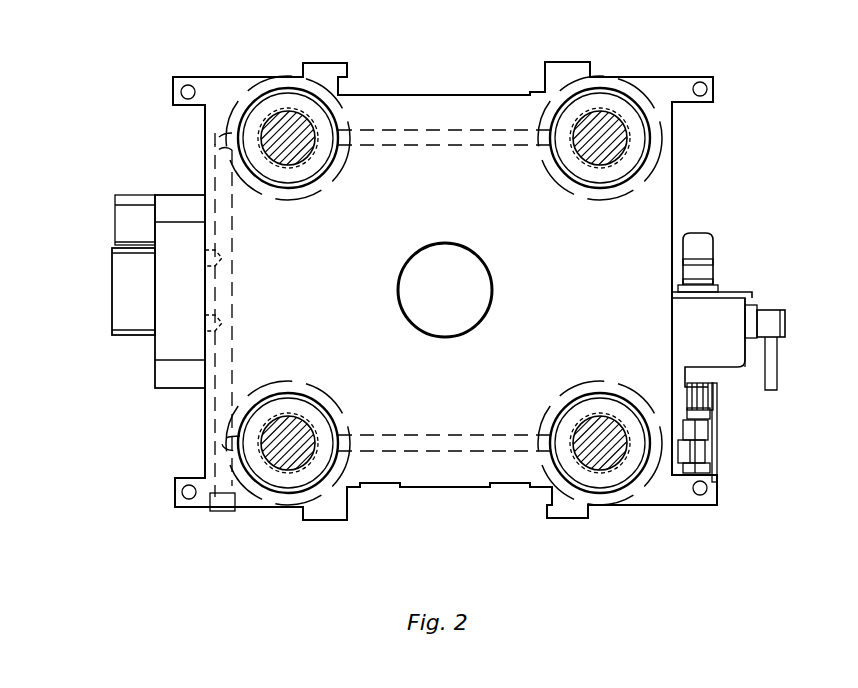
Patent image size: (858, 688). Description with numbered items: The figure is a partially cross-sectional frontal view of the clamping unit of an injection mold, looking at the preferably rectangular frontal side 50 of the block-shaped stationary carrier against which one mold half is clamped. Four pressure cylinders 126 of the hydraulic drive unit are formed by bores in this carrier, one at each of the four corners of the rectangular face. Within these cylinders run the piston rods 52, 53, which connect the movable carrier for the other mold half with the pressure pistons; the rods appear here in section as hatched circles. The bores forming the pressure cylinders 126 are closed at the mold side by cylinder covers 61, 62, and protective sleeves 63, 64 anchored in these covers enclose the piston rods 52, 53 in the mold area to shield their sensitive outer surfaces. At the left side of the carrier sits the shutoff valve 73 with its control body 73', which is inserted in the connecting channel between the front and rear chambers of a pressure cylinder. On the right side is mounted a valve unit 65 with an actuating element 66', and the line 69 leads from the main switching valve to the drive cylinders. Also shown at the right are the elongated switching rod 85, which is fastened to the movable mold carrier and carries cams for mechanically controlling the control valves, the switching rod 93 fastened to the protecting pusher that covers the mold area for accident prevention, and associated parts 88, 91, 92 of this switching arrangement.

The frontal side 50 is at (633, 222).
The piston rod 52 is at (270, 115).
The piston rod 53 is at (608, 130).
The cylinder cover 61 is at (314, 472).
The cylinder cover 62 is at (572, 465).
The protective sleeve 63 is at (290, 113).
The protective sleeve 64 is at (597, 115).
The switch 65 is at (715, 315).
The switch actuator 66' is at (729, 261).
The line 69 is at (768, 327).
The shutoff valve 73 is at (150, 291).
The control body 73' is at (100, 291).
The switching rod 85 is at (705, 437).
The latch bolt 88 is at (713, 392).
The guide rail 91 is at (710, 465).
The latch pin 92 is at (693, 457).
The switching rod 93 is at (710, 415).
The pressure cylinder 126 is at (343, 108).